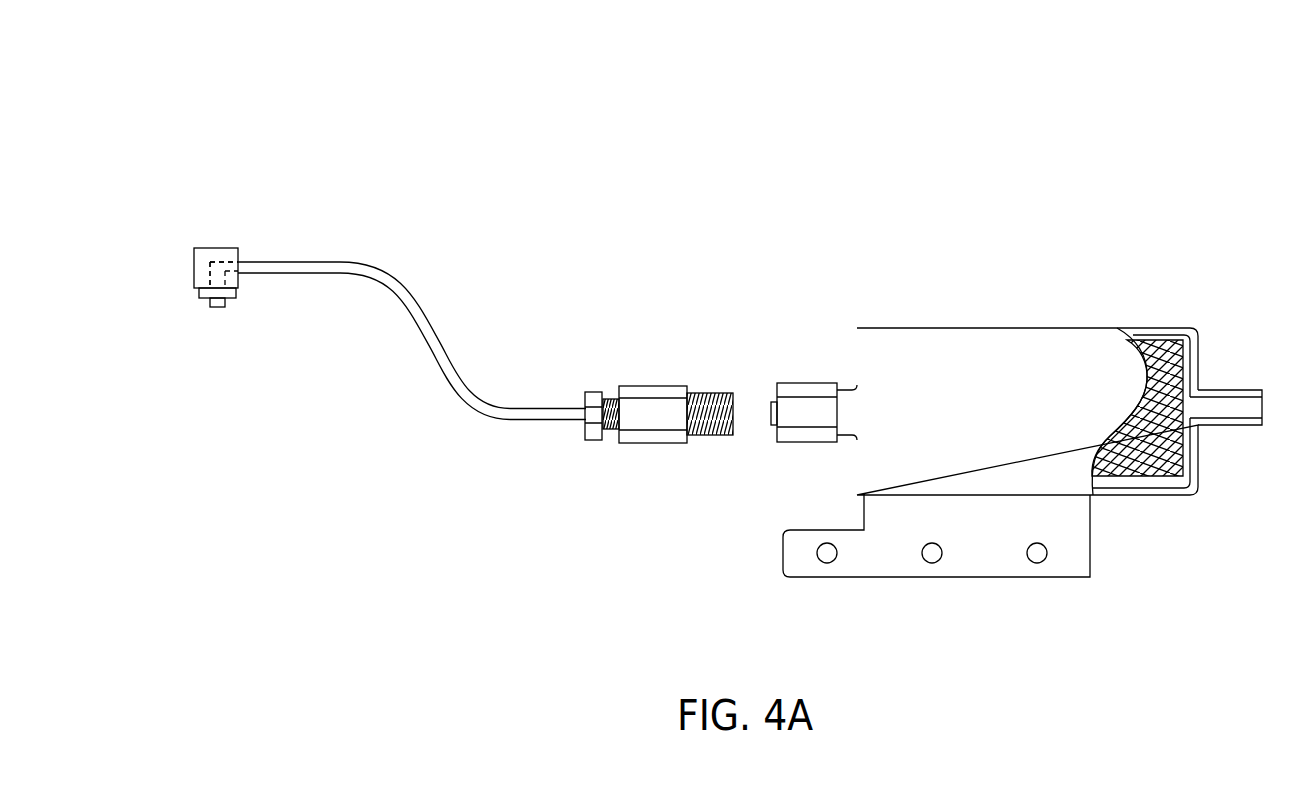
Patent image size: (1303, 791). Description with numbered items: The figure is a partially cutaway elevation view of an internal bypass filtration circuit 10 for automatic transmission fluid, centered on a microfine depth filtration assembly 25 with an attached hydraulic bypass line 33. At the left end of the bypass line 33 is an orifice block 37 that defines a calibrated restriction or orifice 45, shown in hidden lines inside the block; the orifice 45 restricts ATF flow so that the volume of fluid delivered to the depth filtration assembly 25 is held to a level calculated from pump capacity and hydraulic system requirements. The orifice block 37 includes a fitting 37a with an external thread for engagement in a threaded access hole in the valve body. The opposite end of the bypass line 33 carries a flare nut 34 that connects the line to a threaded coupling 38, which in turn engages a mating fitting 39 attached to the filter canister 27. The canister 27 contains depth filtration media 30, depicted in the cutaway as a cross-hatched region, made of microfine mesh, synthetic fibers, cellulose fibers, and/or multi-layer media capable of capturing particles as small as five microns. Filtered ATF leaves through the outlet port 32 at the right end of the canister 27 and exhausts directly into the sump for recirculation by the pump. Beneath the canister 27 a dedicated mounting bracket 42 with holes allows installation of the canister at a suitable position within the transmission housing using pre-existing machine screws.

The internal bypass filtration circuit 10 is at (643, 157).
The depth filtration assembly 25 is at (970, 252).
The filter canister 27 is at (1006, 437).
The depth filtration media 30 is at (1137, 478).
The outlet port 32 is at (1240, 390).
The hydraulic bypass line 33 is at (460, 393).
The flare nut 34 is at (594, 398).
The orifice block 37 is at (215, 248).
The fitting 37a is at (217, 307).
The threaded coupling 38 is at (652, 386).
The mating fitting 39 is at (807, 388).
The mounting bracket 42 is at (1005, 570).
The orifice 45 is at (196, 269).